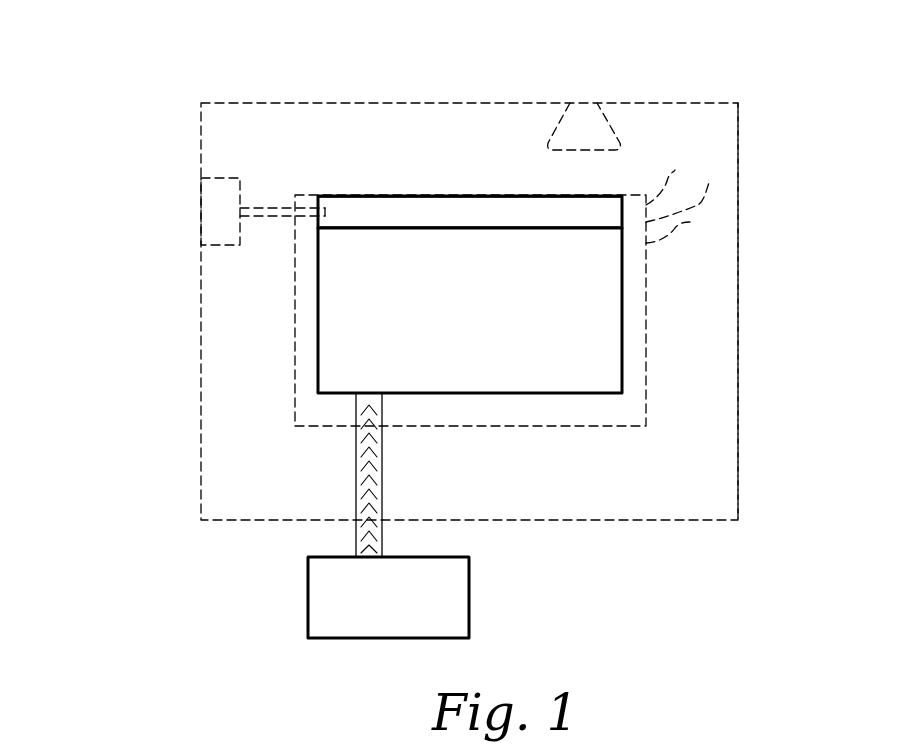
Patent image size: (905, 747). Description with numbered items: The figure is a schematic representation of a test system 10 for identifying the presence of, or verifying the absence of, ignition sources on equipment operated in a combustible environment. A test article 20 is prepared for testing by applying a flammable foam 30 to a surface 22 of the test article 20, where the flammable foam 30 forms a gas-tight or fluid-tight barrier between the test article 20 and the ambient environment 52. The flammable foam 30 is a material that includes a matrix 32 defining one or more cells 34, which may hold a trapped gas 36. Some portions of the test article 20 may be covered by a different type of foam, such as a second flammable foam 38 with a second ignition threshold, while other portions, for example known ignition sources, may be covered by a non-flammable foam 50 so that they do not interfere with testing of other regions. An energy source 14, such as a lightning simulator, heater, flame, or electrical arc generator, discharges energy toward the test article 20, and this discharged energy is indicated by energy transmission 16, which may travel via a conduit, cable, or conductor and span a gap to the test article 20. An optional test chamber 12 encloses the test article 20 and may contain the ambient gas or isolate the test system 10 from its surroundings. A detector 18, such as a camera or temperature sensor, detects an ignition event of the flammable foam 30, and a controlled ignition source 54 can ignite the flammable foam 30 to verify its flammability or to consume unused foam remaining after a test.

The test system 10 is at (110, 77).
The test chamber 12 is at (654, 103).
The energy source 14 is at (402, 609).
The energy transmission 16 is at (356, 537).
The detector 18 is at (562, 130).
The test article 20 is at (480, 322).
The surface 22 is at (357, 227).
The flammable foam 30 is at (340, 165).
The matrix 32 is at (379, 195).
The cells 34 is at (425, 195).
The trapped gas 36 is at (470, 195).
The second flammable foam 38 is at (686, 189).
The non-flammable foam 50 is at (681, 228).
The ambient environment 52 is at (712, 274).
The controlled ignition source 54 is at (222, 245).